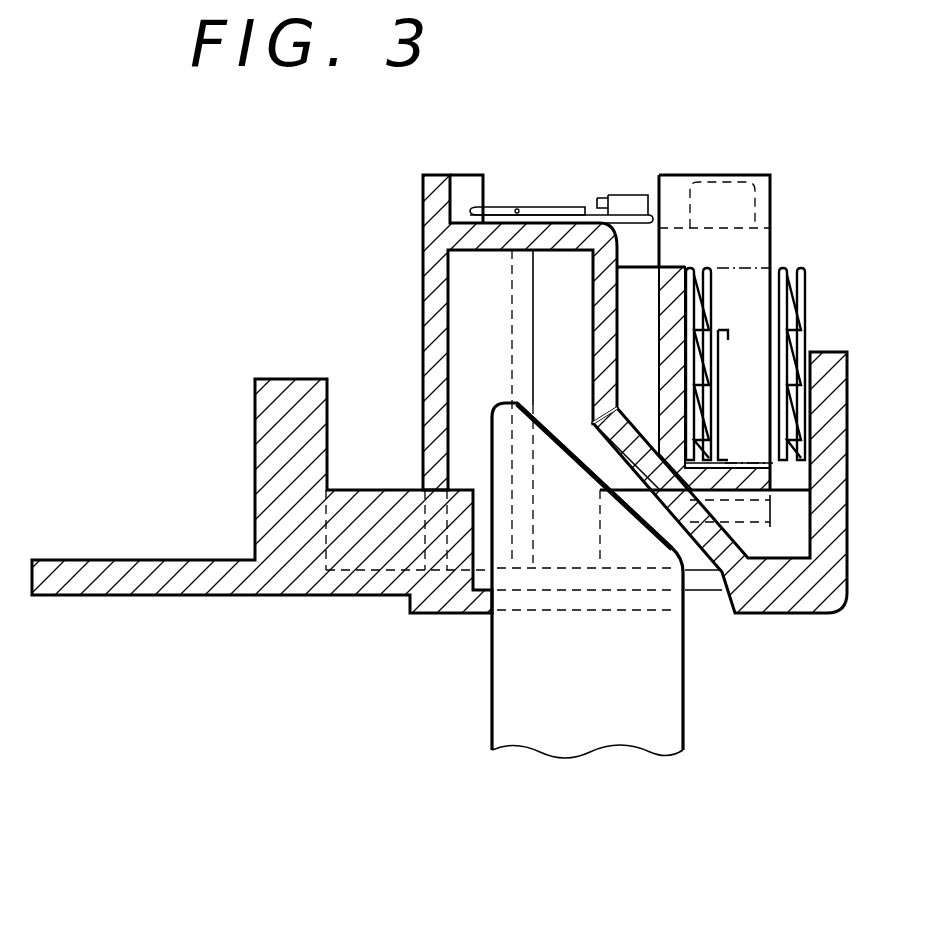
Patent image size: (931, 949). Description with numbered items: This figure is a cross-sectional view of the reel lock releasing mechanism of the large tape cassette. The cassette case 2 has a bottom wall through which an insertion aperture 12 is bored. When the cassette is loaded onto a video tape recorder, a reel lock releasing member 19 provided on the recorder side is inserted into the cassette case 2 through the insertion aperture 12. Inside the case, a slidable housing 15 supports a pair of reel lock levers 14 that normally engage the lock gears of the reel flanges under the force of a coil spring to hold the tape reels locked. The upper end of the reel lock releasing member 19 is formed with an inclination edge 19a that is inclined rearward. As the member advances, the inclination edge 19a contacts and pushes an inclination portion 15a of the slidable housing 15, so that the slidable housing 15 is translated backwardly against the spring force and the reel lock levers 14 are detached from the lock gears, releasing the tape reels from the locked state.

The cassette case 2 is at (118, 597).
The insertion aperture 12 is at (717, 606).
The reel lock lever 14 is at (456, 322).
The slidable housing 15 is at (810, 297).
The inclination portion 15a is at (618, 447).
The reel lock releasing member 19 is at (490, 690).
The inclination edge 19a is at (648, 537).